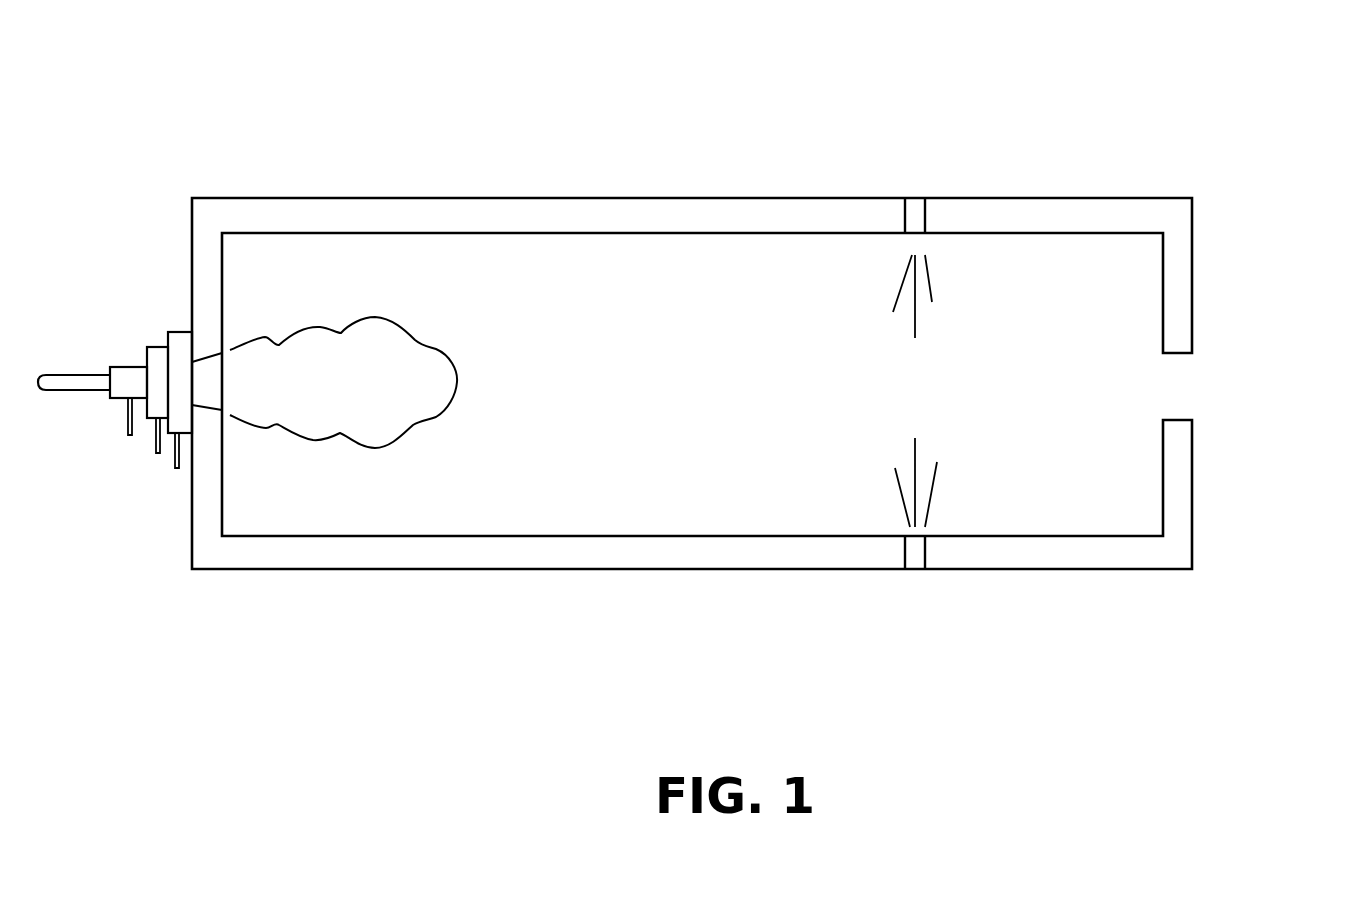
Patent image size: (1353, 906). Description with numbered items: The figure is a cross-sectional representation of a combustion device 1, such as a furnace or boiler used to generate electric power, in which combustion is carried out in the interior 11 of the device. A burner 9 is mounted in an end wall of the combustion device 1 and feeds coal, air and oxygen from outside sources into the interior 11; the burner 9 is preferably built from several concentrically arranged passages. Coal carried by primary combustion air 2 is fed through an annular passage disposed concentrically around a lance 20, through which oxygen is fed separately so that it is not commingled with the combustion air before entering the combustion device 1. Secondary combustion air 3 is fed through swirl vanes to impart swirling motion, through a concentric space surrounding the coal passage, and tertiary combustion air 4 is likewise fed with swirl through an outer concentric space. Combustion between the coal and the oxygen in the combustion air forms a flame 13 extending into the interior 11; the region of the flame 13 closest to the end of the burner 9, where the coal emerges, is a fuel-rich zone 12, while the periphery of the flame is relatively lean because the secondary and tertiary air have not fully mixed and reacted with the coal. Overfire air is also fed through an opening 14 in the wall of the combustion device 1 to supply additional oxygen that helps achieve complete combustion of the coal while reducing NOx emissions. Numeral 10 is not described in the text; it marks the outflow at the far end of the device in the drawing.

The combustion device 1 is at (332, 198).
The primary combustion air 2 is at (130, 437).
The secondary combustion air 3 is at (158, 456).
The tertiary combustion air 4 is at (177, 470).
The burner 9 is at (158, 355).
The gas outlet 10 is at (1152, 388).
The interior 11 is at (308, 305).
The fuel-rich zone 12 is at (353, 393).
The flame 13 is at (549, 413).
The opening 14 is at (913, 188).
The lance 20 is at (75, 374).